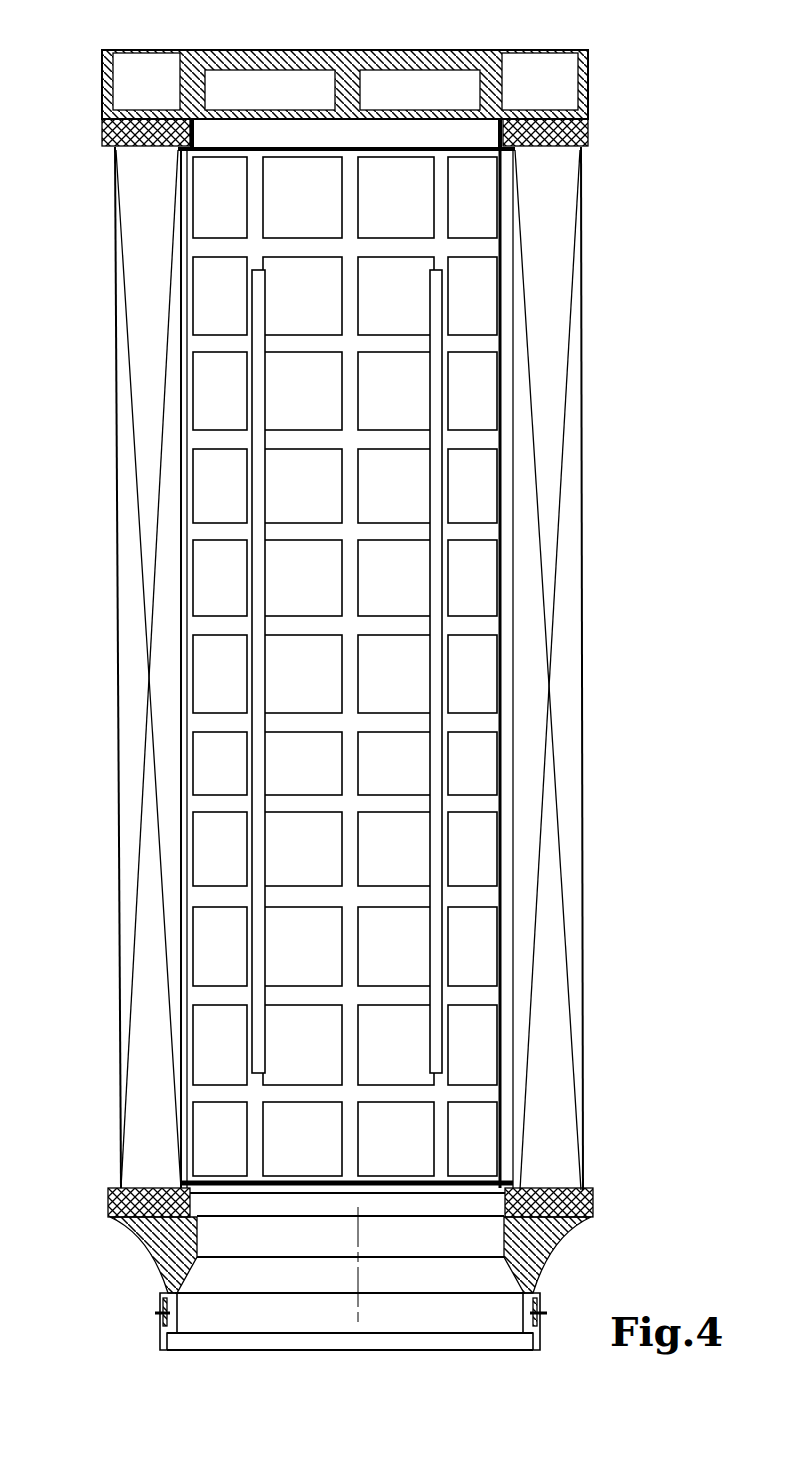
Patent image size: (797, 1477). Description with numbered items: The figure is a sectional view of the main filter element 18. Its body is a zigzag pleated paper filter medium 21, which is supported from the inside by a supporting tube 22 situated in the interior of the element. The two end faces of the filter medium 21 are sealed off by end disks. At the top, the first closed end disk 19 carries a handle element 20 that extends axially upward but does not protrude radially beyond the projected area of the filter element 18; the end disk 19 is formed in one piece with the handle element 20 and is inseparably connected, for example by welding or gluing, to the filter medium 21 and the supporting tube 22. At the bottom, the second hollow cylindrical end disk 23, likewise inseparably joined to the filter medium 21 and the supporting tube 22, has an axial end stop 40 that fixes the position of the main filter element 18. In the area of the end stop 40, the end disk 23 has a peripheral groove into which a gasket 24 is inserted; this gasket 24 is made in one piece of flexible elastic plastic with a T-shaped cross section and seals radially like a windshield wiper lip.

The main filter element 18 is at (603, 286).
The first closed end disk 19 is at (589, 118).
The handle element 20 is at (468, 50).
The filter medium 21 is at (150, 325).
The supporting tube 22 is at (178, 247).
The second hollow cylindrical end disk 23 is at (541, 1242).
The gasket 24 is at (148, 1315).
The axial end stop 40 is at (160, 1357).